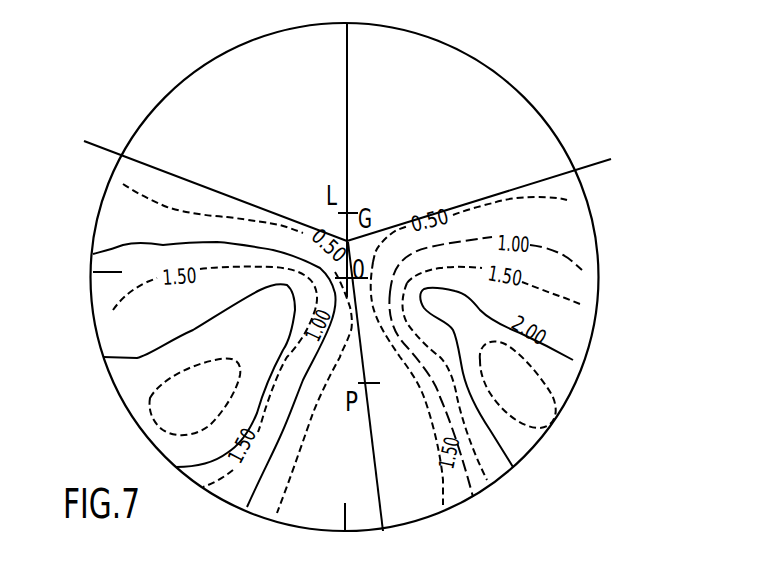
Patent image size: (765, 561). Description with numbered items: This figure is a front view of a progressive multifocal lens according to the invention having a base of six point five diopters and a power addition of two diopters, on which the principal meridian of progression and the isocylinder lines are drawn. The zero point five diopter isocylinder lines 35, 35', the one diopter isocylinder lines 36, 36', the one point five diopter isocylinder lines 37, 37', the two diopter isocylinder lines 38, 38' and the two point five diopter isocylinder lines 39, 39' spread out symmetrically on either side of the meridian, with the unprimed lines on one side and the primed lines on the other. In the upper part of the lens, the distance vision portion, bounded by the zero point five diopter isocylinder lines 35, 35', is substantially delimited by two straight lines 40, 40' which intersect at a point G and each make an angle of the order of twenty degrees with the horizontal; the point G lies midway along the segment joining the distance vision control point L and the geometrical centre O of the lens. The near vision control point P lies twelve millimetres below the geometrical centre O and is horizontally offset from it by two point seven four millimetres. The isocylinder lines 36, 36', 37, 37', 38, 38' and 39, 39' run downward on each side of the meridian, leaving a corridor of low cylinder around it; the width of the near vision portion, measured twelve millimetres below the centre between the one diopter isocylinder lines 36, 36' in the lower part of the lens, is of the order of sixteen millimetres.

The 0.5 diopter isocylinder line 35 is at (510, 345).
The 0.5 diopter isocylinder line 35' is at (197, 348).
The 1 diopter isocylinder line 36 is at (526, 367).
The 1 diopter isocylinder line 36' is at (187, 374).
The 1.5 diopter isocylinder line 37 is at (532, 373).
The 1.5 diopter isocylinder line 37' is at (180, 377).
The 2 diopter isocylinder line 38 is at (535, 377).
The 2 diopter isocylinder line 38' is at (169, 375).
The 2.5 diopter isocylinder line 39 is at (551, 398).
The 2.5 diopter isocylinder line 39' is at (158, 407).
The straight line 40 is at (487, 169).
The straight line 40' is at (212, 167).